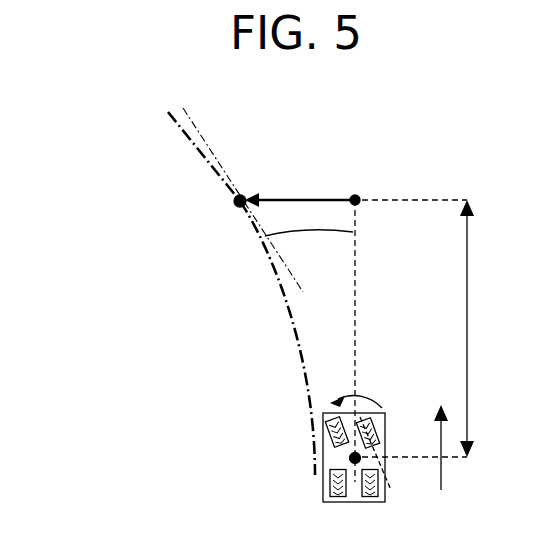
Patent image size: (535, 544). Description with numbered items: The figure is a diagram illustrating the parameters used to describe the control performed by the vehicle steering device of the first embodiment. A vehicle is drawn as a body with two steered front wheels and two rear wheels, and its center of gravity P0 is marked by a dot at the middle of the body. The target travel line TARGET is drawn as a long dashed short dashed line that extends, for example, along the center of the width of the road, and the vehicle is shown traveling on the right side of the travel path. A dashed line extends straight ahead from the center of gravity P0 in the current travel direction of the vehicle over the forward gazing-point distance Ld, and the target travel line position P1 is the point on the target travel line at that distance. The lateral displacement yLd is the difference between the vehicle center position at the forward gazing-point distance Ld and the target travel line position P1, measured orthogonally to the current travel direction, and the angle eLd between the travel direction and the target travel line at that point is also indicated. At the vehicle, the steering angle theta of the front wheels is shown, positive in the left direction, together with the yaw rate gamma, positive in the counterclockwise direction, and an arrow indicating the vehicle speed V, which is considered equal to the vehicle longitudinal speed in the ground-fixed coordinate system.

The target travel line TARGET is at (164, 284).
The target travel line position P1 is at (228, 208).
The vehicle center of gravity P0 is at (324, 475).
The lateral displacement yLd is at (302, 191).
The heading deviation angle at the forward gazing-point distance eLd is at (309, 248).
The forward gazing-point distance Ld is at (427, 328).
The vehicle speed V is at (439, 467).
The steering angle theta is at (383, 453).
The yaw rate gamma is at (358, 389).